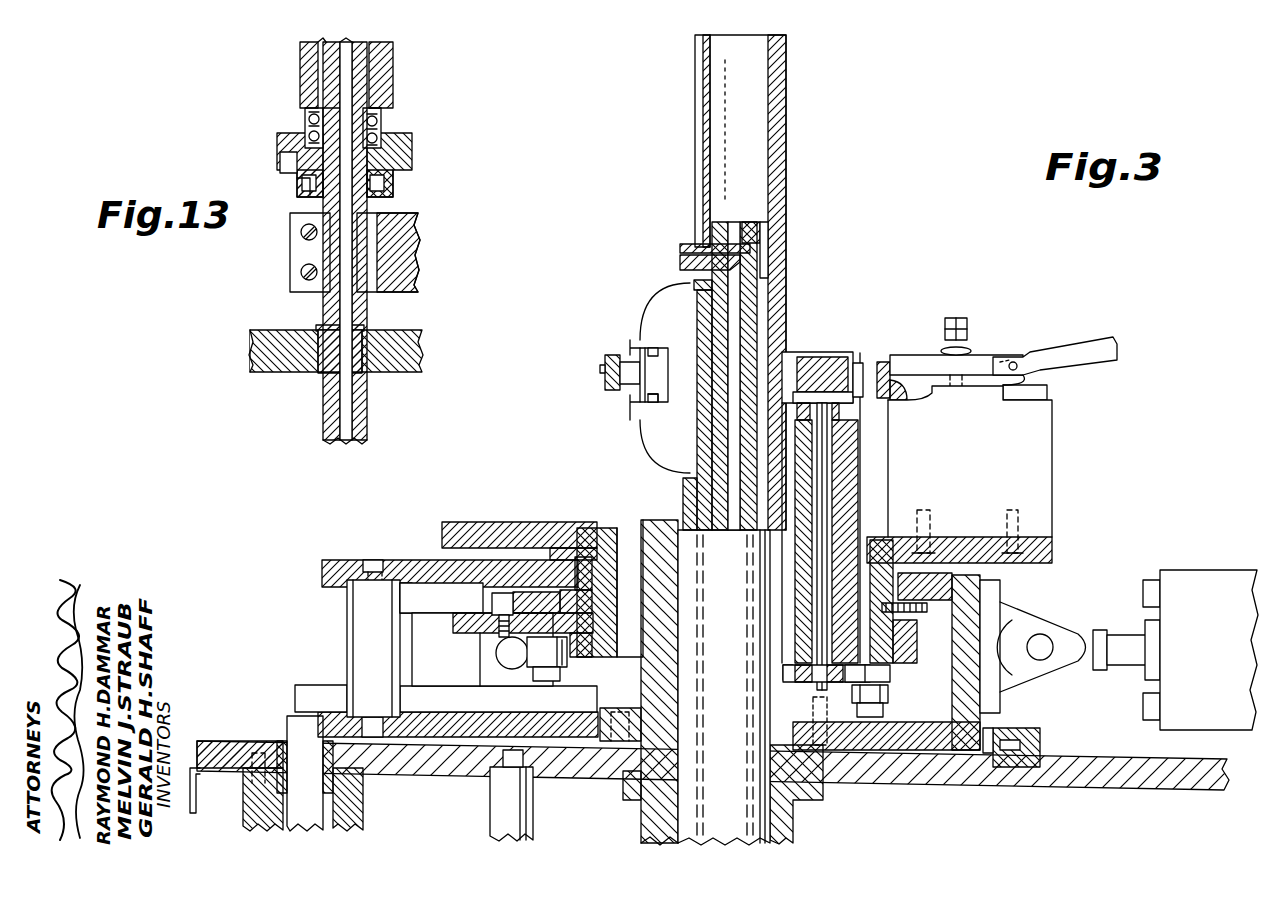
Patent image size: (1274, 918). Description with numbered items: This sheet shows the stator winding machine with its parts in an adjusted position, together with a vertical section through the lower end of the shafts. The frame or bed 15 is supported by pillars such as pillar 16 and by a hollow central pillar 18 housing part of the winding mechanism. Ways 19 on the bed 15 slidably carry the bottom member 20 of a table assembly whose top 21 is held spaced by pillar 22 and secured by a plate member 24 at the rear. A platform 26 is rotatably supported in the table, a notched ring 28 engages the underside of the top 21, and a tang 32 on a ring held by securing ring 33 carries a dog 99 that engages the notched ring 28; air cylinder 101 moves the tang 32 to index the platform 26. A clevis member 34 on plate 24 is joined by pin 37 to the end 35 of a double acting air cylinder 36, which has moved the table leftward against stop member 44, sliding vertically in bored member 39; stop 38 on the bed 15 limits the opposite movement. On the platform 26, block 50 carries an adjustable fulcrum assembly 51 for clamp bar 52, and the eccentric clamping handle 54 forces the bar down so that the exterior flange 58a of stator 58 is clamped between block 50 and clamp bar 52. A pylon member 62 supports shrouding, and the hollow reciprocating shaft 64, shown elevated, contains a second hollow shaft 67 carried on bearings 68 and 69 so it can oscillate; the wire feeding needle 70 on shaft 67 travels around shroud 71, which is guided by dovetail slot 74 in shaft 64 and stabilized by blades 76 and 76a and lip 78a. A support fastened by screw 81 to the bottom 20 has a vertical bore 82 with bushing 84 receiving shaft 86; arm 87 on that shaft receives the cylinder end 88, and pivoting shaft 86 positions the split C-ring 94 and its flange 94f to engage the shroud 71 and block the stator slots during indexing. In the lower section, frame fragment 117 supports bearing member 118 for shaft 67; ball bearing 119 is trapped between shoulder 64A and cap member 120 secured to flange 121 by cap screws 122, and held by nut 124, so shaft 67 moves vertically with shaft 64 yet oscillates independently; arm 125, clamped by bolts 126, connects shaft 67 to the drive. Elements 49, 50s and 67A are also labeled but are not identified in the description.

In FIG. 3, the frame or bed 15 is at (586, 779).
In FIG. 3, the pillar 16 is at (493, 817).
In FIG. 3, the central pillar 18 is at (795, 840).
In FIG. 3, the ways 19 is at (305, 685).
In FIG. 3, the bottom member of table assembly 20 is at (330, 714).
In FIG. 3, the table top 21 is at (345, 560).
In FIG. 3, the pillar 22 is at (350, 620).
In FIG. 3, the plate member 24 is at (973, 615).
In FIG. 3, the platform 26 is at (500, 522).
In FIG. 3, the notched ring 28 is at (569, 588).
In FIG. 3, the tang 32 is at (455, 626).
In FIG. 3, the securing ring 33 is at (573, 656).
In FIG. 3, the clevis member 34 is at (1015, 688).
In FIG. 3, the end of air cylinder 35 is at (1092, 631).
In FIG. 3, the air cylinder 36 is at (1217, 576).
In FIG. 3, the pin 37 is at (1045, 655).
In FIG. 3, the stop 38 is at (1042, 742).
In FIG. 3, the vertically bored member 39 is at (364, 801).
In FIG. 3, the stop member 44 is at (297, 720).
In FIG. 3, the spacer 49 is at (982, 753).
In FIG. 3, the block member 50 is at (1053, 438).
In FIG. 3, the housing screws 50s is at (1020, 515).
In FIG. 3, the adjustable fulcrum assembly 51 is at (979, 331).
In FIG. 3, the clamp bar 52 is at (900, 356).
In FIG. 3, the eccentric clamping handle 54 is at (1068, 352).
In FIG. 3, the stator 58 is at (880, 362).
In FIG. 3, the exterior flange member of stator 58a is at (900, 383).
In FIG. 3, the pylon member 62 is at (618, 742).
In FIG. 13, the hollow shaft 64 is at (386, 61).
In FIG. 3, the hollow shaft 64 is at (788, 123).
In FIG. 13, the shoulder 64A is at (390, 107).
In FIG. 13, the second hollow shaft 67 is at (361, 80).
In FIG. 3, the second hollow shaft 67 is at (750, 220).
In FIG. 13, the inner tube shoulder 67A is at (326, 110).
In FIG. 3, the bearing 68 is at (766, 228).
In FIG. 3, the bearing 69 is at (772, 272).
In FIG. 3, the wire feeding needle 70 is at (682, 249).
In FIG. 3, the shroud member 71 is at (662, 303).
In FIG. 3, the dovetail slot 74 is at (700, 93).
In FIG. 3, the blade 76 is at (655, 350).
In FIG. 3, the blade 76a is at (652, 402).
In FIG. 3, the lip 78a is at (631, 403).
In FIG. 3, the screw 81 is at (828, 750).
In FIG. 3, the vertical bore 82 is at (838, 470).
In FIG. 3, the bushing 84 is at (838, 437).
In FIG. 3, the shaft 86 is at (828, 505).
In FIG. 3, the arm 87 is at (891, 676).
In FIG. 3, the end of driving means 88 is at (889, 696).
In FIG. 3, the split C-ring 94 is at (630, 351).
In FIG. 3, the flange 94f is at (825, 392).
In FIG. 3, the dog member 99 is at (508, 594).
In FIG. 3, the air cylinder 101 is at (442, 676).
In FIG. 13, the frame fragment 117 is at (263, 360).
In FIG. 13, the bearing member 118 is at (320, 373).
In FIG. 13, the ball bearing 119 is at (308, 123).
In FIG. 13, the cap member 120 is at (394, 184).
In FIG. 13, the flange 121 is at (413, 146).
In FIG. 13, the cap screws 122 is at (288, 172).
In FIG. 13, the nut 124 is at (297, 183).
In FIG. 13, the arm 125 is at (400, 255).
In FIG. 13, the bolts 126 is at (300, 273).